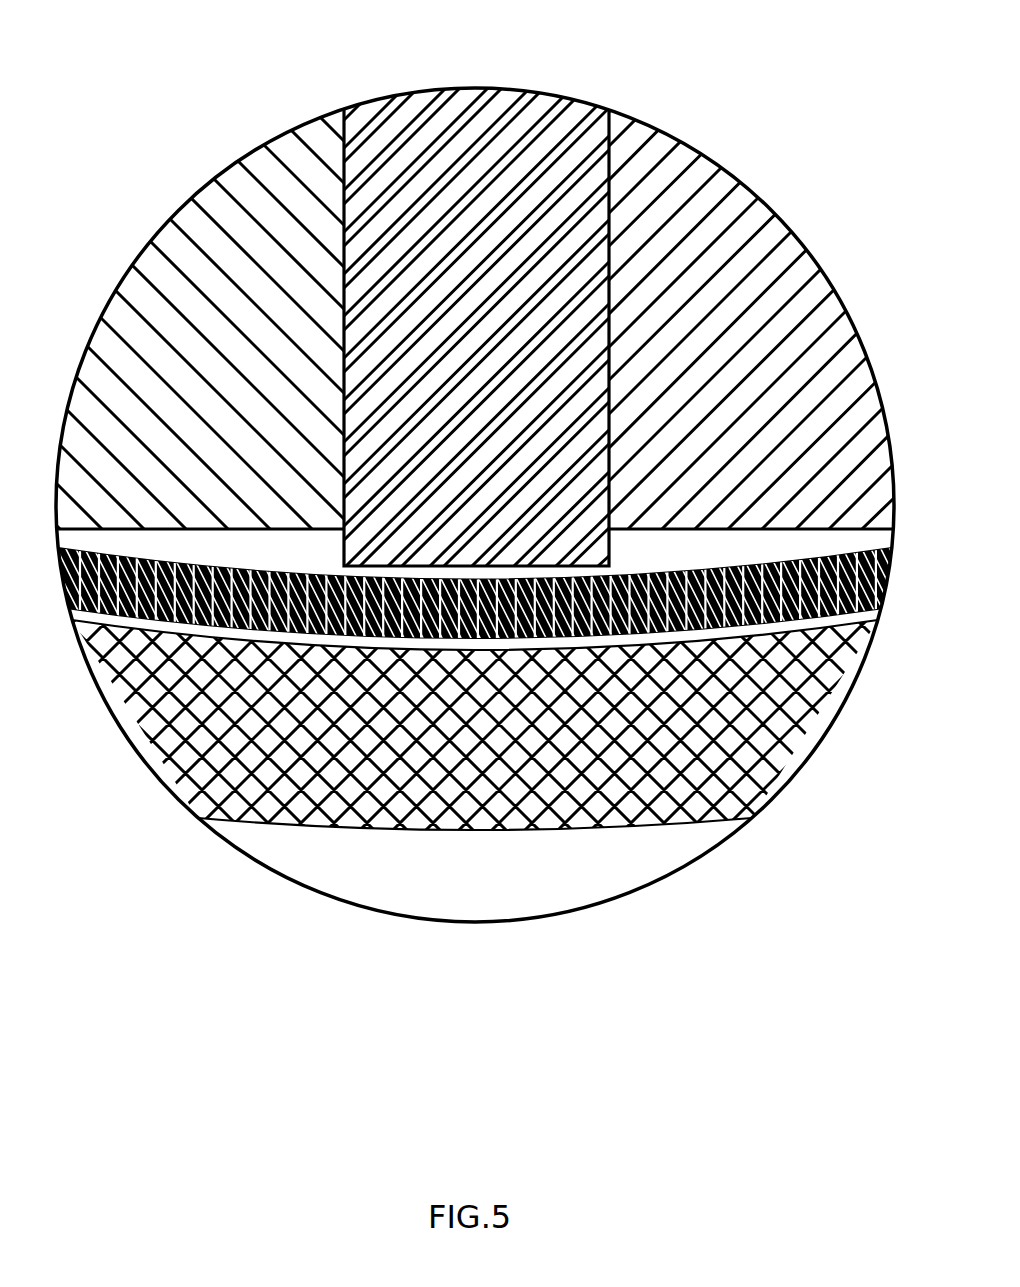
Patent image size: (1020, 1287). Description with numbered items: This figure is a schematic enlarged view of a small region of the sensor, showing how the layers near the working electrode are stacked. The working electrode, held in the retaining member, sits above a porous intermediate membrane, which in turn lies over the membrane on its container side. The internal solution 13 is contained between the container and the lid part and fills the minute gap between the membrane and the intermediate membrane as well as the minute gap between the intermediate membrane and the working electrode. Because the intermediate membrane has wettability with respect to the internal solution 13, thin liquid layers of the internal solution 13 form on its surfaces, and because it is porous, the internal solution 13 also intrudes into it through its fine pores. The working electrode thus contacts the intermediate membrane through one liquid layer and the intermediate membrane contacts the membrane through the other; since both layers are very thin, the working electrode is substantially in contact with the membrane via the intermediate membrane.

The internal solution 13 is at (138, 547).